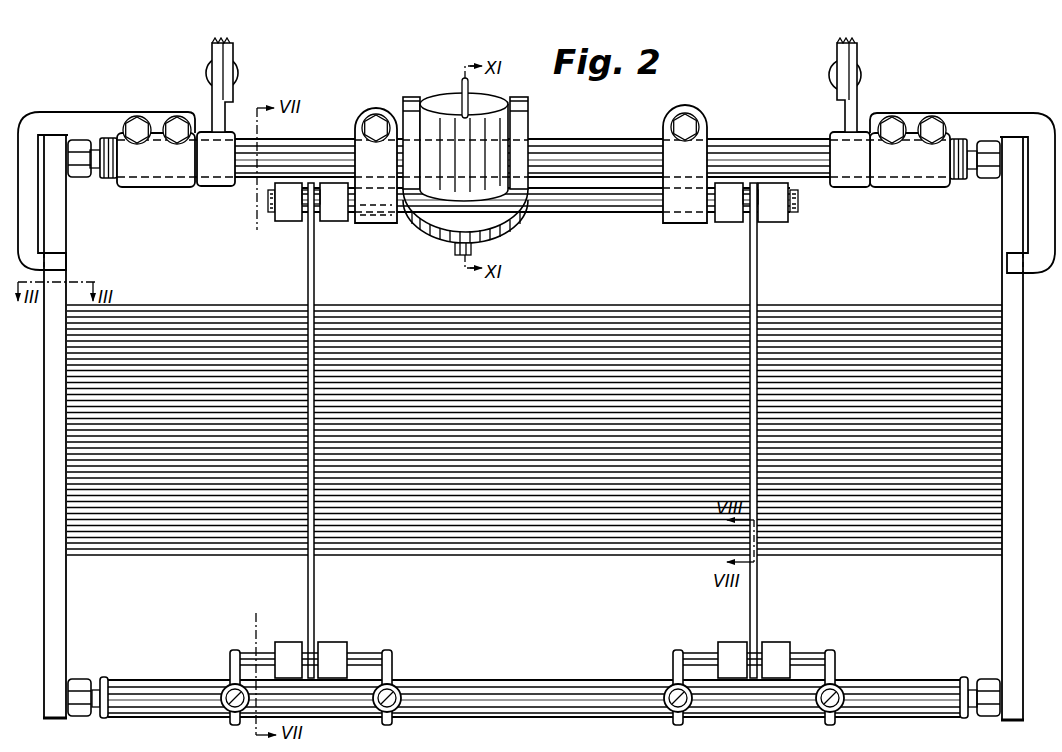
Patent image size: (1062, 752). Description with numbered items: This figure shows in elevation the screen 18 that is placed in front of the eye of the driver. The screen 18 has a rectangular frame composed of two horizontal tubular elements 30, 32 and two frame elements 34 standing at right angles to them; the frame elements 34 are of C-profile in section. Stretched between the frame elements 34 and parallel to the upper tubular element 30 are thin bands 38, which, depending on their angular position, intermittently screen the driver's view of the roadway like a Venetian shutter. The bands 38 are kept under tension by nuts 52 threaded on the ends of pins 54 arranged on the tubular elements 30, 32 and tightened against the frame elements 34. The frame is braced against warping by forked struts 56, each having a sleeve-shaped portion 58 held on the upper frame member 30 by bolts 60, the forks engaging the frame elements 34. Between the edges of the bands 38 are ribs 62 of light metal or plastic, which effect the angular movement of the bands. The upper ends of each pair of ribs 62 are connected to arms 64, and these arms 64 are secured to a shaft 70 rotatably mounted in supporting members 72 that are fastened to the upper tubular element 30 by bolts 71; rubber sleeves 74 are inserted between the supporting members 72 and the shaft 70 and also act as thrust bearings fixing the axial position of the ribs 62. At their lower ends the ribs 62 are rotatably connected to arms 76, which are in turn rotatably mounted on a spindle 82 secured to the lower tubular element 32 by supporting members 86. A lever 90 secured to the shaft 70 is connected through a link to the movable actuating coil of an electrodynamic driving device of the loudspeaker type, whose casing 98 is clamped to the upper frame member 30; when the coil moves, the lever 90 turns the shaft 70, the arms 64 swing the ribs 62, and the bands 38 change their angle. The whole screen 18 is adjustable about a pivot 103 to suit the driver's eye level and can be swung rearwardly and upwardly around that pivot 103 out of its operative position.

The screen 18 is at (532, 139).
The horizontal tubular element 30 is at (289, 152).
The horizontal tubular element 32 is at (447, 692).
The frame element 34 is at (49, 391).
The band 38 is at (592, 530).
The nut 52 is at (88, 180).
The pin 54 is at (97, 140).
The forked strut 56 is at (44, 114).
The sleeve-shaped portion 58 is at (155, 172).
The bolt 60 is at (175, 118).
The rib 62 is at (308, 270).
The arm 64 is at (336, 210).
The shaft 70 is at (596, 203).
The bolt 71 is at (369, 118).
The supporting member 72 is at (395, 116).
The rubber sleeve 74 is at (390, 222).
The arm 76 is at (330, 650).
The spindle 82 is at (368, 658).
The supporting member 86 is at (389, 672).
The lever 90 is at (460, 255).
The casing 98 is at (497, 147).
The pivot 103 is at (860, 77).